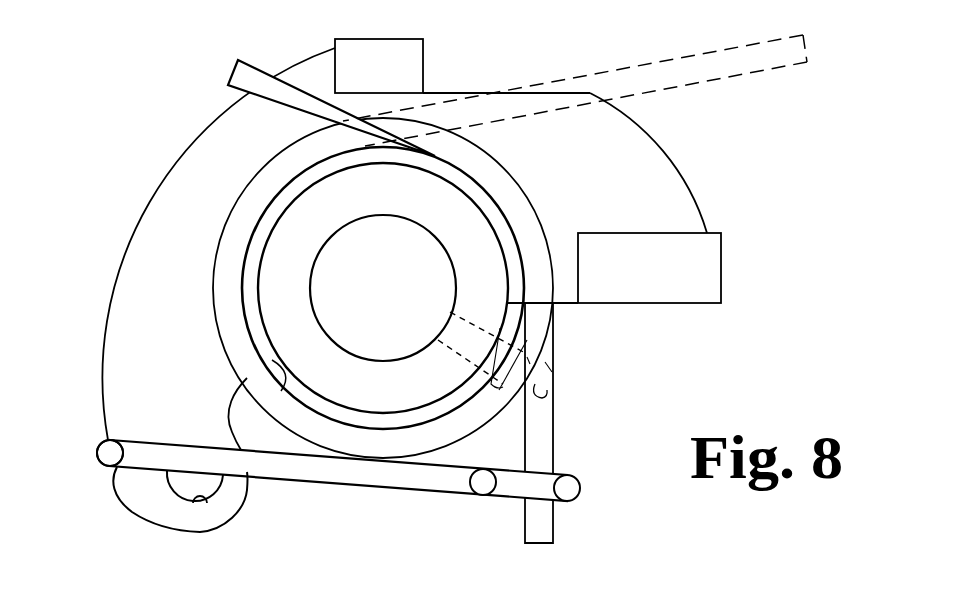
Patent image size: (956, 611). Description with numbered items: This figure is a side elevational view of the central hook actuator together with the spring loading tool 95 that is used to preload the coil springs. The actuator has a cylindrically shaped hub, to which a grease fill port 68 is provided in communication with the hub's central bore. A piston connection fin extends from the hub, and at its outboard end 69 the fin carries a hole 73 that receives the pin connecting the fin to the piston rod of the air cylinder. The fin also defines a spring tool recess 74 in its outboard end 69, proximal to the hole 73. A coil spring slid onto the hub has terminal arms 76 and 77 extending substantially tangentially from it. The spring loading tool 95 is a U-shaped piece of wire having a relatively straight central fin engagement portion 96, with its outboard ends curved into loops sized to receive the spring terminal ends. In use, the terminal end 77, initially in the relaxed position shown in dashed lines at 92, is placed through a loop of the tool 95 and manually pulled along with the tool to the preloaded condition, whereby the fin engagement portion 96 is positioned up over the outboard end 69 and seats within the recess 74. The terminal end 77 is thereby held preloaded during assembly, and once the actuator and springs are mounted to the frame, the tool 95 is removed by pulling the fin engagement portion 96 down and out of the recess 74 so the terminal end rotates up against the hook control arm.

The grease fill port 68 is at (545, 393).
The outboard end 69 is at (150, 497).
The hole 73 is at (203, 505).
The spring tool recess 74 is at (121, 447).
The terminal arm 76 is at (272, 76).
The terminal arm 77 is at (553, 534).
The relaxed position 92 is at (720, 77).
The spring loading tool 95 is at (394, 489).
The fin engagement portion 96 is at (98, 461).